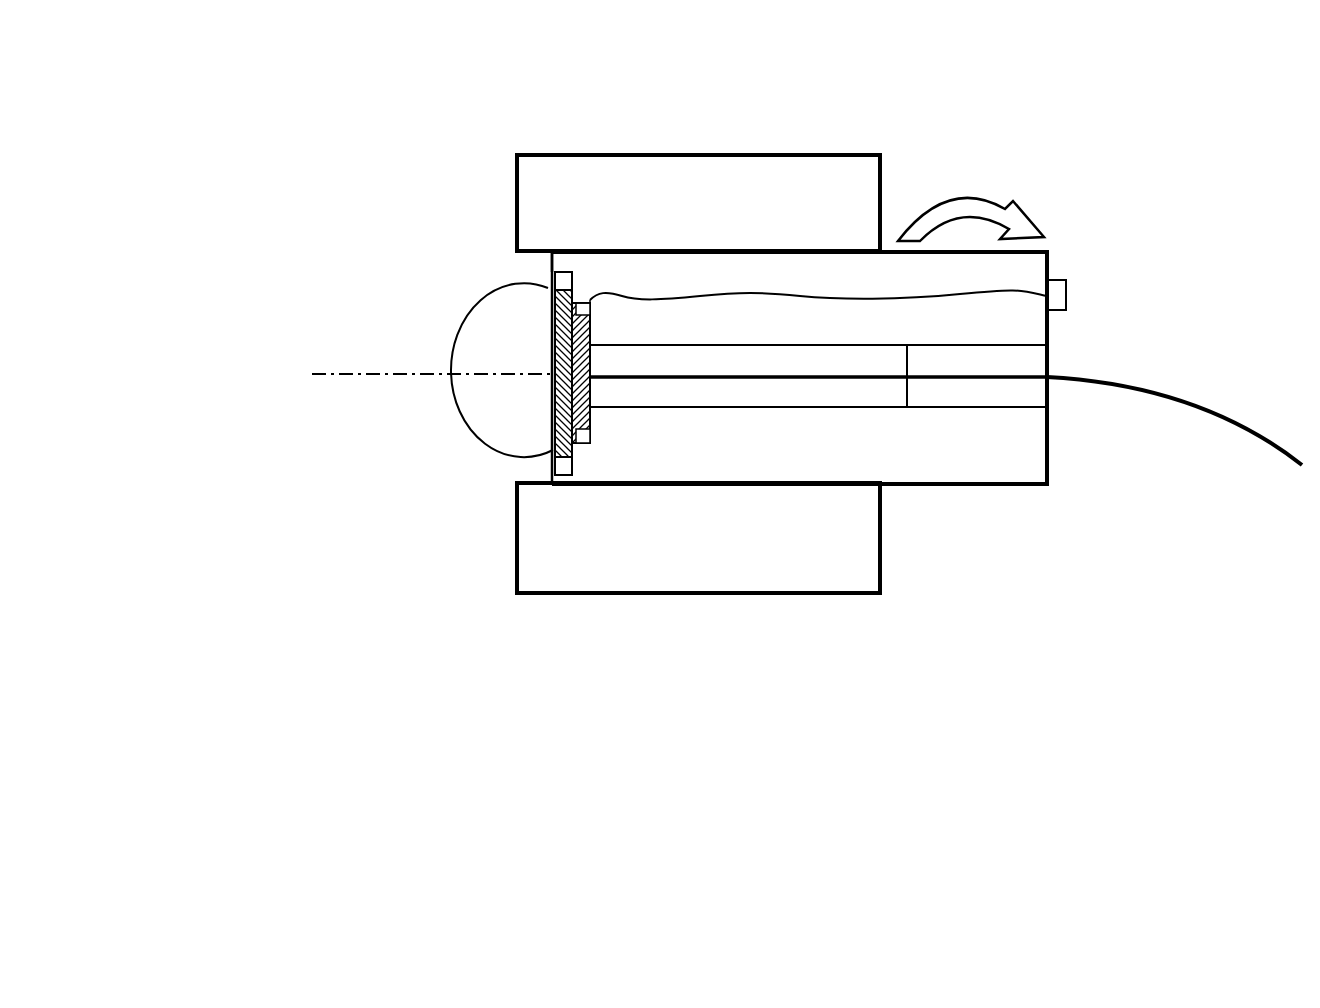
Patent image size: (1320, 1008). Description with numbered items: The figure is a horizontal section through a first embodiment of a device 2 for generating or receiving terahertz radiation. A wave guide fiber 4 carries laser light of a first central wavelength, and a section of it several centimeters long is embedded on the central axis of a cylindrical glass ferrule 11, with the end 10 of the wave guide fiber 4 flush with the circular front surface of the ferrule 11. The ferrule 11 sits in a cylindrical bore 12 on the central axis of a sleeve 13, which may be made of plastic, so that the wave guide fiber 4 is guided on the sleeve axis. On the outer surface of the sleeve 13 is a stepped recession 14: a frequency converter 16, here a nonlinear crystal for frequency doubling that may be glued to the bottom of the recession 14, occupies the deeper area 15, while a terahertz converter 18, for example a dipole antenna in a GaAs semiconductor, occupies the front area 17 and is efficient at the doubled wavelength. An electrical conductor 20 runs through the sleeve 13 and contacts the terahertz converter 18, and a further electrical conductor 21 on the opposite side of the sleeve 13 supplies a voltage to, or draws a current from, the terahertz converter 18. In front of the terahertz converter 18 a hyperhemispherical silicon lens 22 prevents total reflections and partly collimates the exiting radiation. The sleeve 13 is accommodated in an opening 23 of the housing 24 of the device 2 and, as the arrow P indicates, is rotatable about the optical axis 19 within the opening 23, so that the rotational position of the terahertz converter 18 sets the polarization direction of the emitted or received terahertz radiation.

The device 2 is at (218, 138).
The wave guide fiber 4 is at (1200, 412).
The end of the wave guide fiber 10 is at (596, 365).
The ferrule 11 is at (900, 392).
The cylindrical bore 12 is at (1017, 357).
The sleeve 13 is at (845, 457).
The stepped recession 14 is at (540, 287).
The deeper area of the recession 15 is at (583, 290).
The frequency converter 16 is at (589, 427).
The front area of the recession 17 is at (566, 272).
The terahertz converter 18 is at (564, 452).
The optical axis 19 is at (394, 380).
The electrical conductor 20 is at (607, 285).
The electrical conductor 21 is at (1073, 279).
The hyperhemispherical lens 22 is at (488, 416).
The opening 23 is at (527, 265).
The housing 24 is at (516, 214).